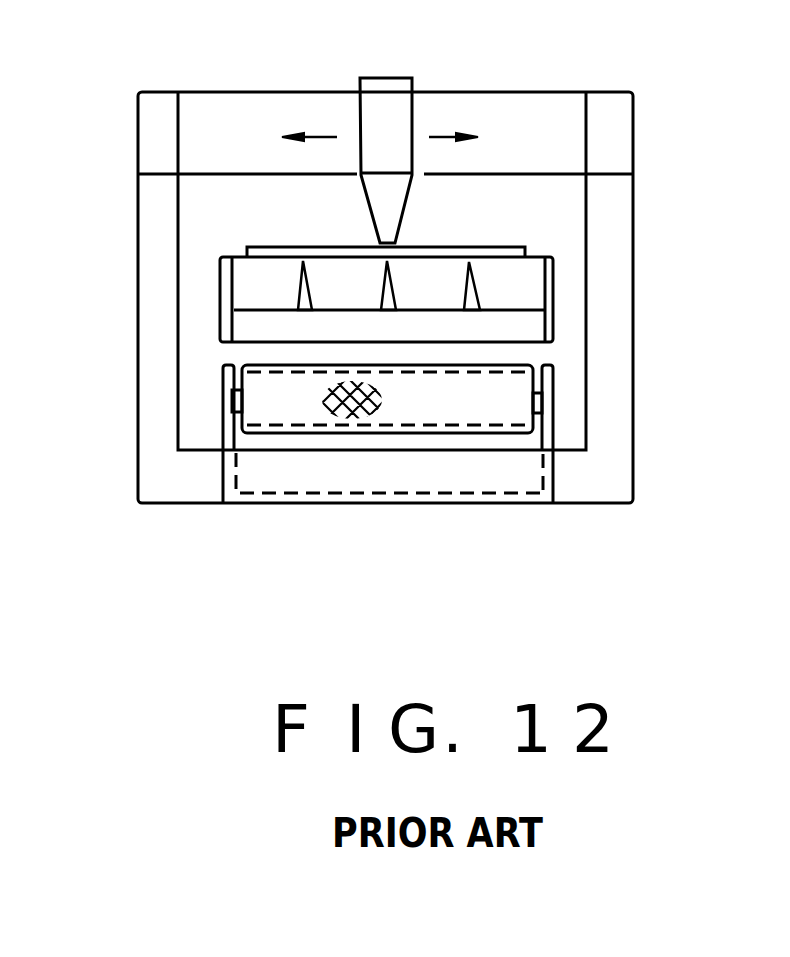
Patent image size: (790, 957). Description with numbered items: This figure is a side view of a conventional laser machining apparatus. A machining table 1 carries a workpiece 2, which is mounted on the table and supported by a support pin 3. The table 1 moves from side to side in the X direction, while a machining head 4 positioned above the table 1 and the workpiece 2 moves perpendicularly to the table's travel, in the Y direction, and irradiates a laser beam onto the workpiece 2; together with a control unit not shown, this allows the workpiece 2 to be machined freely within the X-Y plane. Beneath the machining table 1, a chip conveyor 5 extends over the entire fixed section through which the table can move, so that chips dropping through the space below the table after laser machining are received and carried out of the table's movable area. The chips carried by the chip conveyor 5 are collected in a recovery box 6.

The machining table 1 is at (557, 299).
The workpiece 2 is at (495, 247).
The support pin 3 is at (298, 293).
The machining head 4 is at (390, 112).
The chip conveyor 5 is at (503, 410).
The recovery box 6 is at (413, 472).